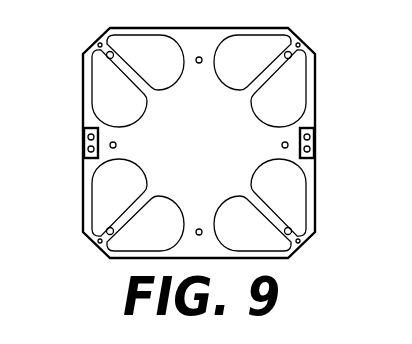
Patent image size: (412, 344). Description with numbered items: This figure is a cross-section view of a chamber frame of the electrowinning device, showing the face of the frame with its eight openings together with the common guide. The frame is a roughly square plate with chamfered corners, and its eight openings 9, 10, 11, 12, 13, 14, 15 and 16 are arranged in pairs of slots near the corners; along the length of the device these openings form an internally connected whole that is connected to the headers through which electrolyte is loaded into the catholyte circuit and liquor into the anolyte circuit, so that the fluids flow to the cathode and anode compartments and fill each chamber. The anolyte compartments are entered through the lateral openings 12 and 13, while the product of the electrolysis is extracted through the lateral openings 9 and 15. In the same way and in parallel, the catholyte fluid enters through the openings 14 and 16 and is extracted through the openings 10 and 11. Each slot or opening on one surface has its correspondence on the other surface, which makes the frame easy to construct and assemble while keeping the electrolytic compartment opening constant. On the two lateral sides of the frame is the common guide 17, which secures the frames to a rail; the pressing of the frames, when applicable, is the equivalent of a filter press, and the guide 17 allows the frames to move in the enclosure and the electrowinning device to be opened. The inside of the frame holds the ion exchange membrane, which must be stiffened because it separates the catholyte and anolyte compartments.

The opening 9 is at (108, 76).
The opening 10 is at (103, 50).
The opening 11 is at (295, 50).
The opening 12 is at (290, 76).
The opening 13 is at (291, 204).
The opening 14 is at (256, 234).
The opening 15 is at (107, 204).
The opening 16 is at (142, 234).
The common guide 17 is at (82, 142).